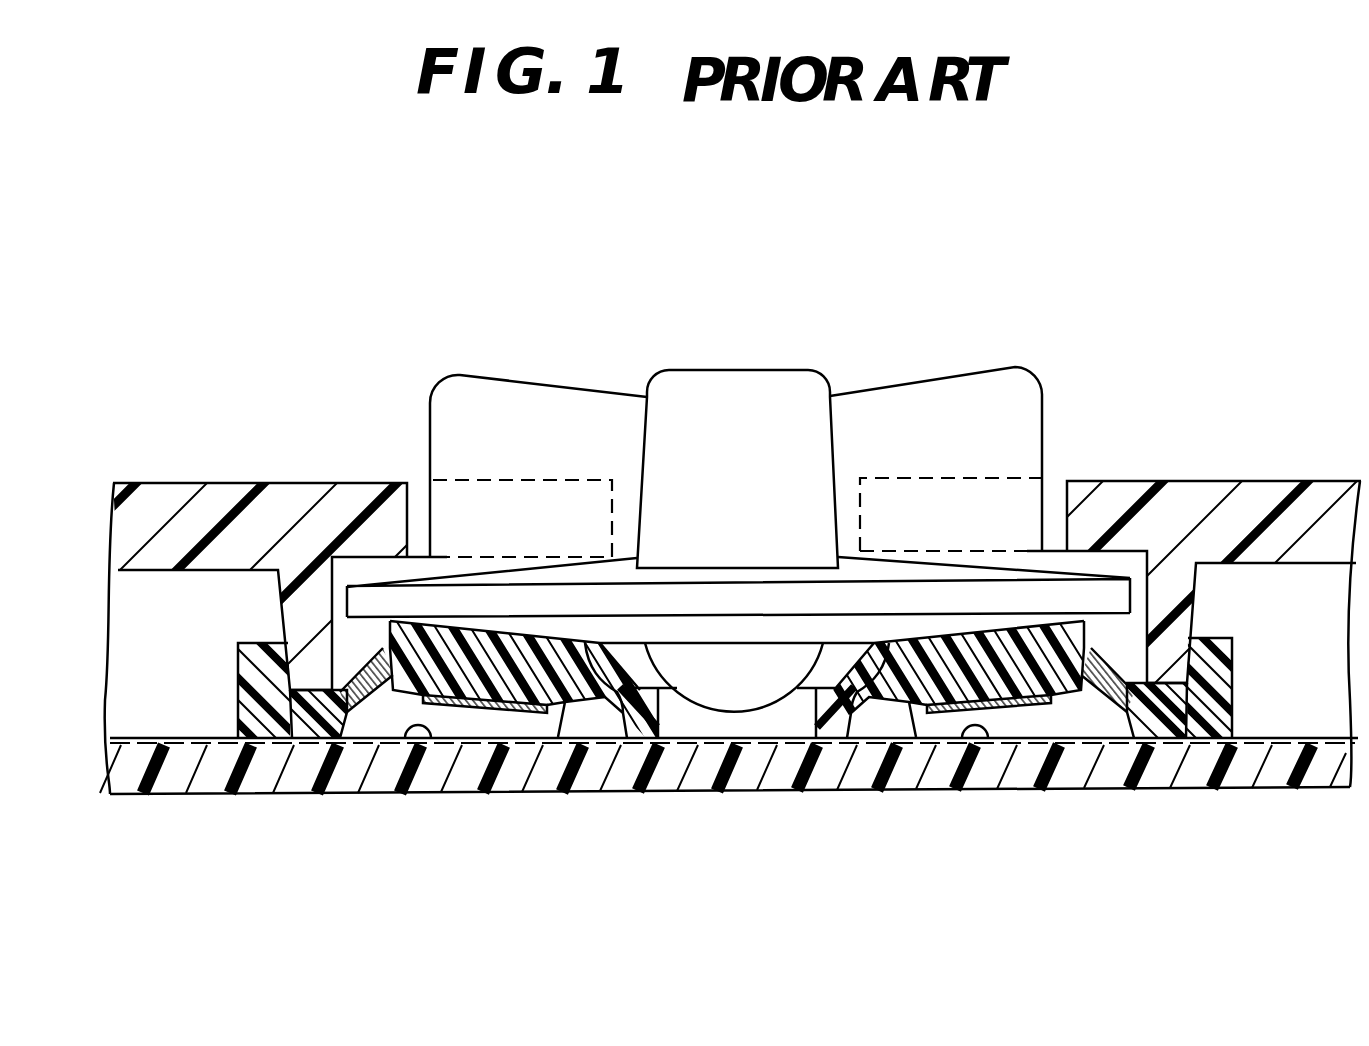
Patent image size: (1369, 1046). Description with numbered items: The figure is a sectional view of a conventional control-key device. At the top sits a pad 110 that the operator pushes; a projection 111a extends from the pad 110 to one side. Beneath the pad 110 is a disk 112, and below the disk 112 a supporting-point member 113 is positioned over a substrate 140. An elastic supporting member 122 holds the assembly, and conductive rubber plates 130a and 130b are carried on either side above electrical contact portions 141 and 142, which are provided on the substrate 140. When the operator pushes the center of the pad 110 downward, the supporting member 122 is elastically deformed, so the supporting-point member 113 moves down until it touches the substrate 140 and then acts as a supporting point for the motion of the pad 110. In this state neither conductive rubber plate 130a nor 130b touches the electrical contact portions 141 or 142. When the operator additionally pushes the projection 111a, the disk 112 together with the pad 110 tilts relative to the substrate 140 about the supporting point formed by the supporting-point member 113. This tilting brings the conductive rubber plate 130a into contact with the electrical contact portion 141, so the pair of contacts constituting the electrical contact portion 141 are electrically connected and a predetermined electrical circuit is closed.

The pad 110 is at (742, 370).
The projection 111a is at (513, 378).
The disk 112 is at (345, 607).
The supporting-point member 113 is at (753, 693).
The supporting member 122 is at (562, 740).
The conductive rubber plate 130a is at (480, 707).
The conductive rubber plate 130b is at (1042, 698).
The substrate 140 is at (672, 770).
The electrical contact portion 141 is at (408, 740).
The electrical contact portion 142 is at (975, 738).